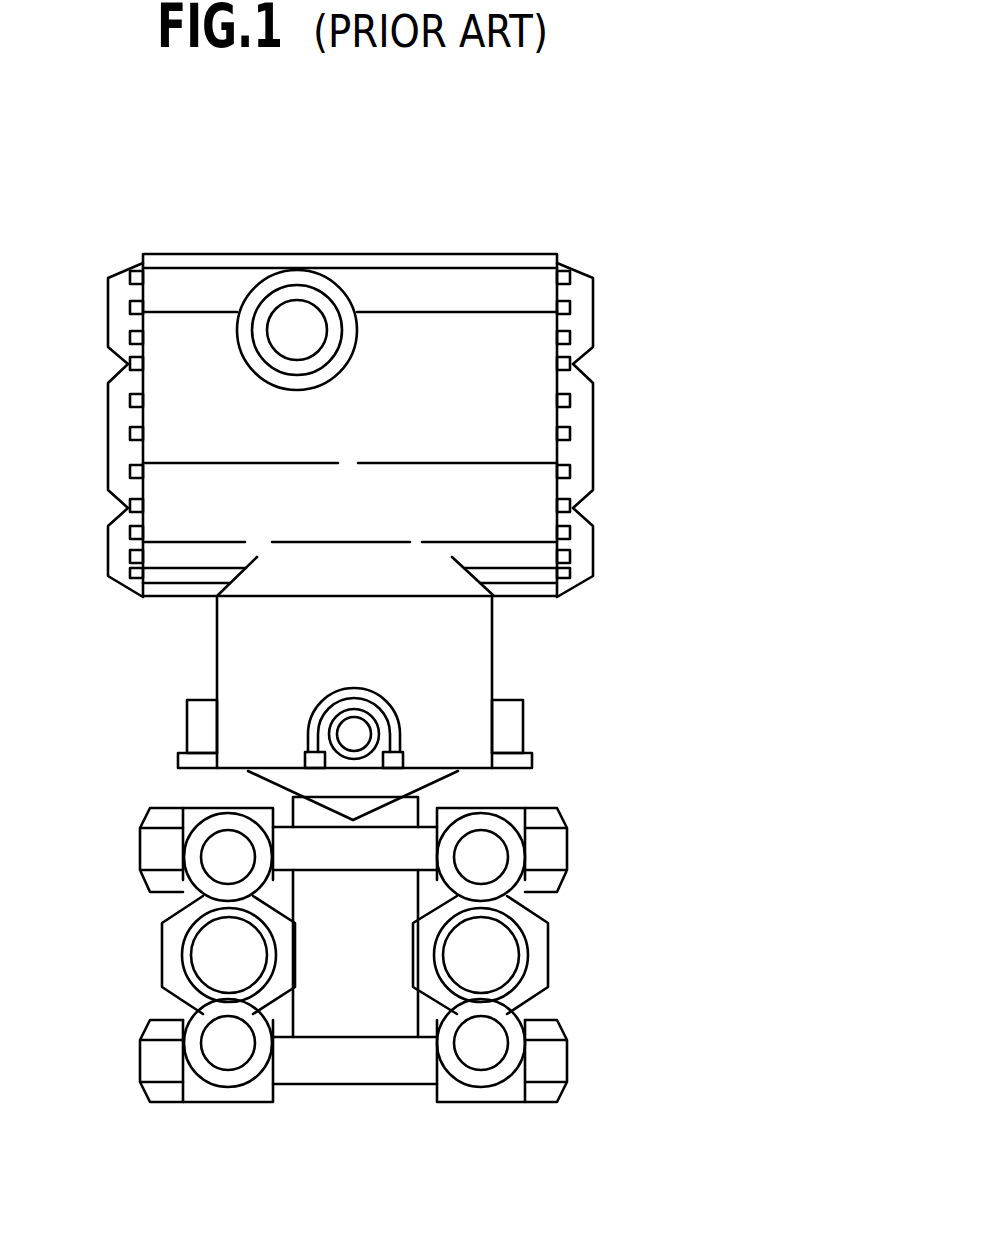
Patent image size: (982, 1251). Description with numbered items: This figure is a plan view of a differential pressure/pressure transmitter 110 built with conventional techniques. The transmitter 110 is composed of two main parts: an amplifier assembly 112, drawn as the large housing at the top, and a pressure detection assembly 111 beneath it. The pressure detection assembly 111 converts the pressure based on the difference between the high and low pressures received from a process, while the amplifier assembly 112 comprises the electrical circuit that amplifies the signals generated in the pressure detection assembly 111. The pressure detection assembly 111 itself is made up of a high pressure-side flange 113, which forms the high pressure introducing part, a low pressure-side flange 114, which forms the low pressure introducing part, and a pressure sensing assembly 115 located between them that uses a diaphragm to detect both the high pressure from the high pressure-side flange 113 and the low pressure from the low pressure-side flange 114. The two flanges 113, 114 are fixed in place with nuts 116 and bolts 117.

The differential pressure/pressure transmitter 110 is at (750, 233).
The pressure detection assembly 111 is at (695, 983).
The amplifier assembly 112 is at (660, 454).
The high pressure-side flange 113 is at (172, 962).
The low pressure-side flange 114 is at (537, 957).
The pressure sensing assembly 115 is at (363, 1025).
The nuts 116 is at (163, 811).
The bolts 117 is at (557, 847).